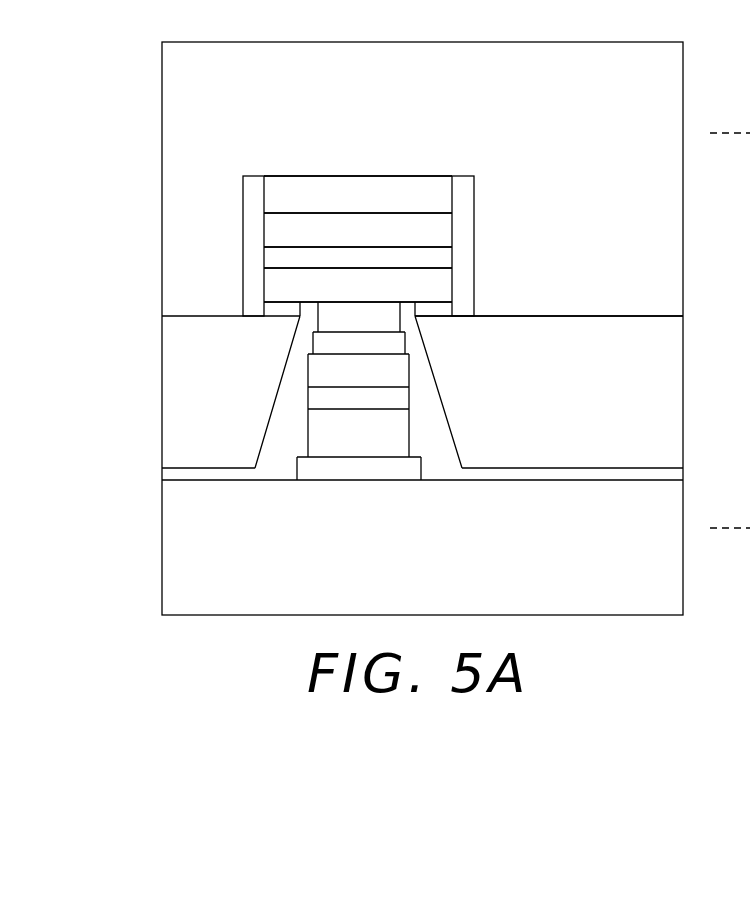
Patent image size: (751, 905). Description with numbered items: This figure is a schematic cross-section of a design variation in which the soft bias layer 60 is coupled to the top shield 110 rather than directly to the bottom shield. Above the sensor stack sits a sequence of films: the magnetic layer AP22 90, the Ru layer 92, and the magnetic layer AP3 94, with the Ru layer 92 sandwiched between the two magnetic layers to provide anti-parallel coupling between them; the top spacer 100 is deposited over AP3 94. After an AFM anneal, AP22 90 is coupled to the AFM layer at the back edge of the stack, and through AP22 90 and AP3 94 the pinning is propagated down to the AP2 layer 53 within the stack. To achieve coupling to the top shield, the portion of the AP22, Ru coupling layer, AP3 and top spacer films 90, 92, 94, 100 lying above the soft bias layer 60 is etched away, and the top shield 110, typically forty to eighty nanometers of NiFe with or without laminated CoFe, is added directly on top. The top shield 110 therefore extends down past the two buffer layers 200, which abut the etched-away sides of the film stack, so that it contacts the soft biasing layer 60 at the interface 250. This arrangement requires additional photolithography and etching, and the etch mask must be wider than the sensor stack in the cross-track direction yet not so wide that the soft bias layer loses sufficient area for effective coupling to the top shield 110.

The top shield 110 is at (172, 104).
The buffer layers 200 is at (259, 182).
The top spacer 100 is at (280, 198).
The AP3 layer 94 is at (280, 236).
The Ru layer 92 is at (280, 258).
The AP22 layer 90 is at (280, 282).
The AP2 layer 53 is at (338, 316).
The soft bias layer 60 is at (172, 394).
The interface 250 is at (657, 316).